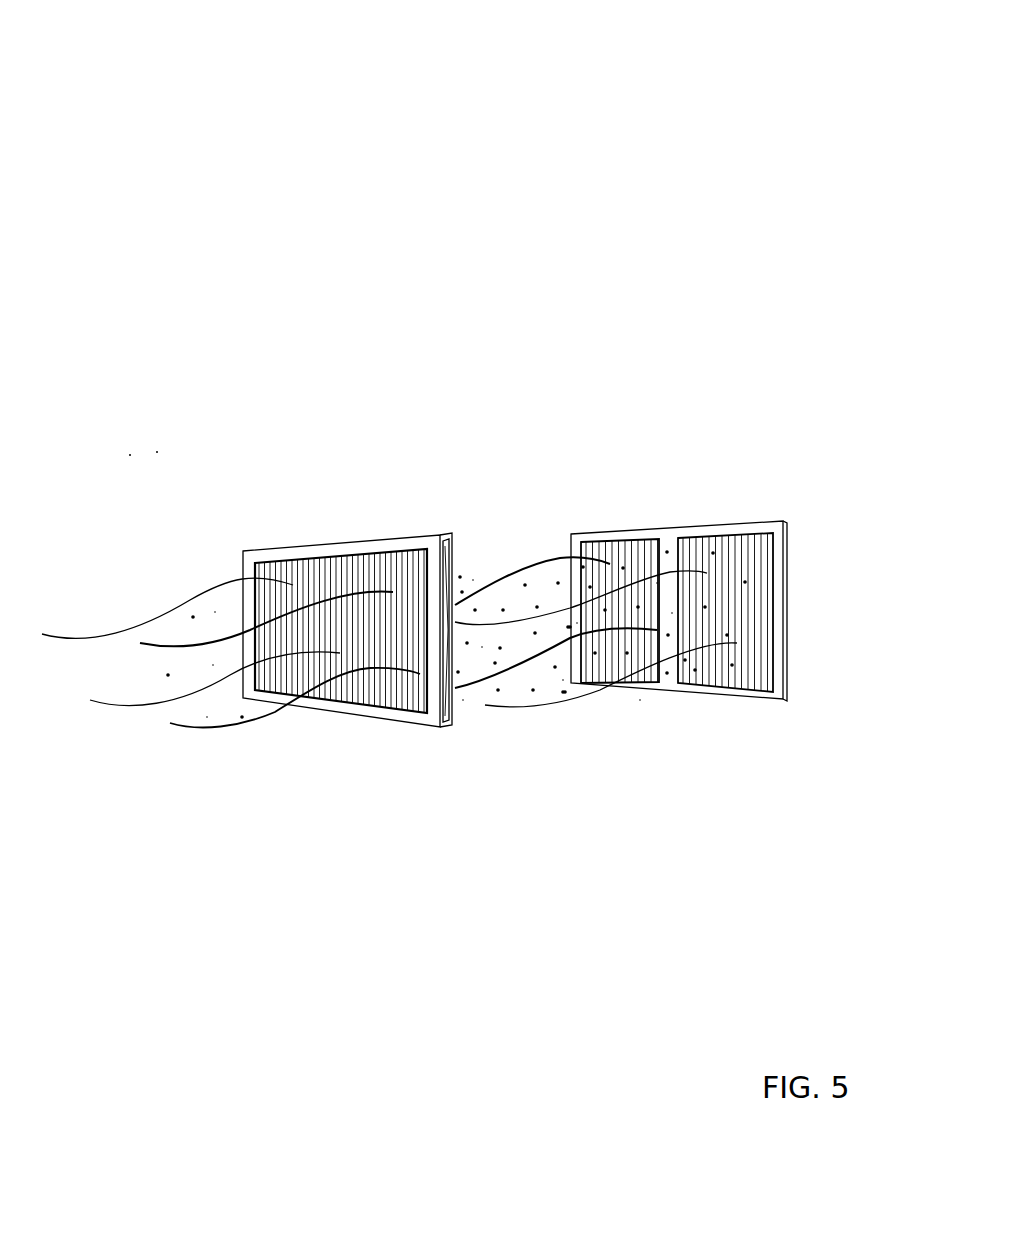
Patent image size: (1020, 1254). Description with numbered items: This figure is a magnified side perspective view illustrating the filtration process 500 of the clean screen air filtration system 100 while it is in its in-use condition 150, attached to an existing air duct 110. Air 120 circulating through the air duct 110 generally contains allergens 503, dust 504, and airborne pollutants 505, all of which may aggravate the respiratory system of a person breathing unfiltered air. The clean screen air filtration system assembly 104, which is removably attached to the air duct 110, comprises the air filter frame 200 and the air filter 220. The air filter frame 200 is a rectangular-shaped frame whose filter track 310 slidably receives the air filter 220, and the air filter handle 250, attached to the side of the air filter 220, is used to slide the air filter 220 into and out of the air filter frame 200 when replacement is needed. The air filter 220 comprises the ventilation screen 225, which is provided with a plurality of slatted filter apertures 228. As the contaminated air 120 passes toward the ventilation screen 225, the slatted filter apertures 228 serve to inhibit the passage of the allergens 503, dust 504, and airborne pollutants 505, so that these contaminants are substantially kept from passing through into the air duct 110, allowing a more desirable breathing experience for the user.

The clean screen air filtration system 100 is at (576, 112).
The clean screen air filtration system assembly 104 is at (603, 145).
The in-use condition 150 is at (635, 179).
The filtration process 500 is at (683, 233).
The air 120 is at (160, 612).
The filter apertures 228 is at (289, 576).
The air filter frame 200 is at (374, 635).
The air filter handle 250 is at (445, 580).
The airborne pollutants 505 is at (497, 574).
The air duct 110 is at (708, 526).
The ventilation screen 225 is at (354, 692).
The filter track 310 is at (372, 712).
The air filter 220 is at (400, 700).
The dust 504 is at (518, 690).
The allergens 503 is at (617, 700).